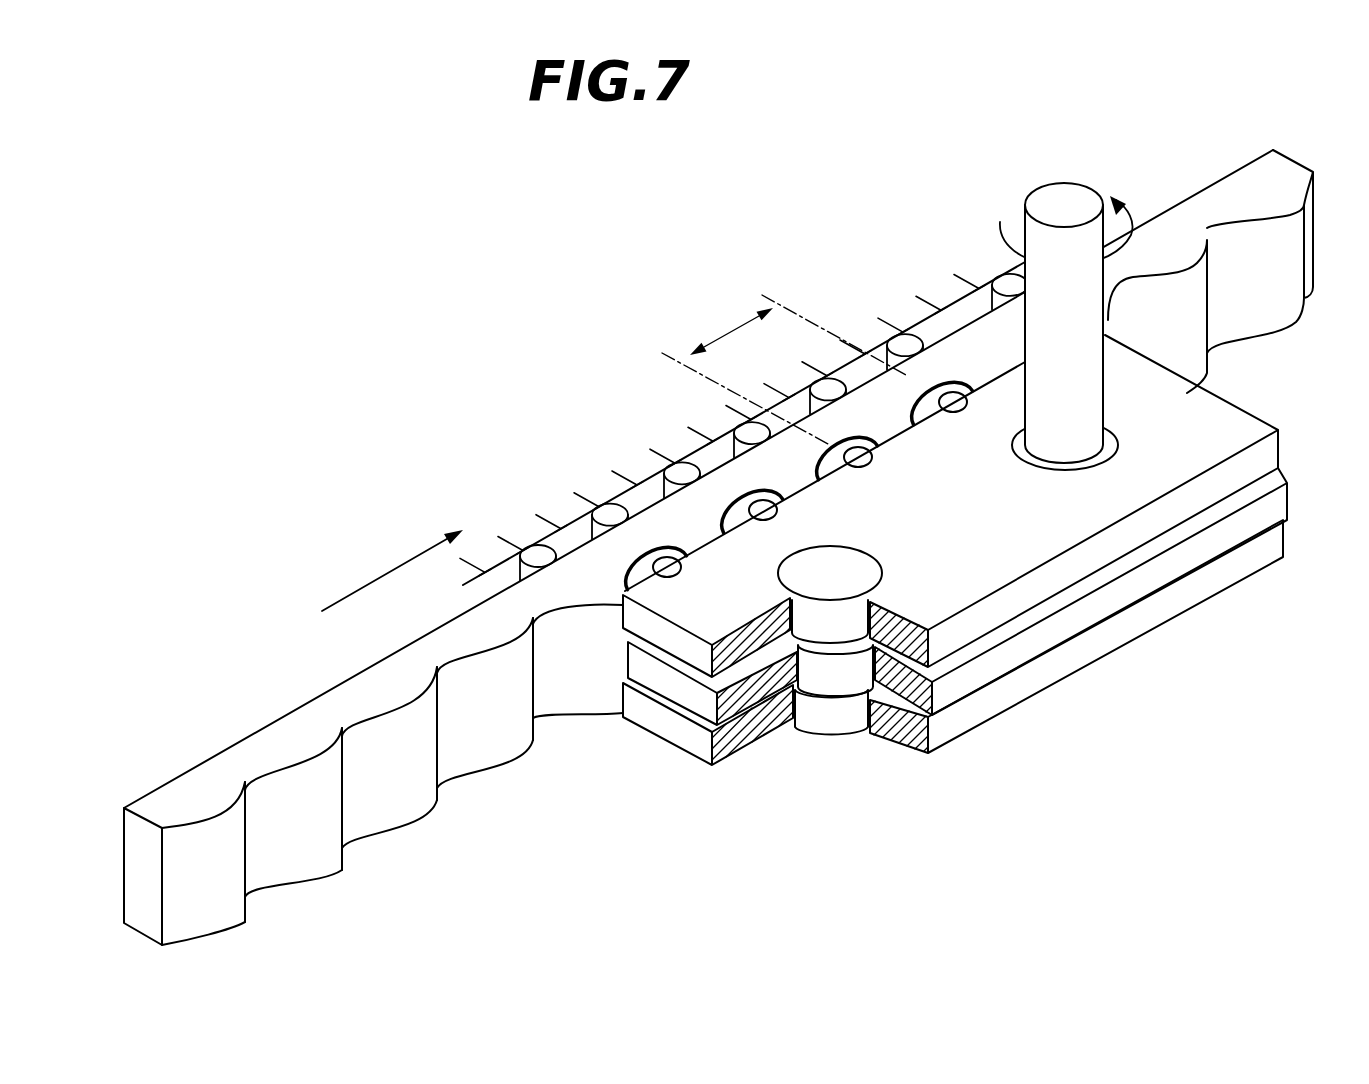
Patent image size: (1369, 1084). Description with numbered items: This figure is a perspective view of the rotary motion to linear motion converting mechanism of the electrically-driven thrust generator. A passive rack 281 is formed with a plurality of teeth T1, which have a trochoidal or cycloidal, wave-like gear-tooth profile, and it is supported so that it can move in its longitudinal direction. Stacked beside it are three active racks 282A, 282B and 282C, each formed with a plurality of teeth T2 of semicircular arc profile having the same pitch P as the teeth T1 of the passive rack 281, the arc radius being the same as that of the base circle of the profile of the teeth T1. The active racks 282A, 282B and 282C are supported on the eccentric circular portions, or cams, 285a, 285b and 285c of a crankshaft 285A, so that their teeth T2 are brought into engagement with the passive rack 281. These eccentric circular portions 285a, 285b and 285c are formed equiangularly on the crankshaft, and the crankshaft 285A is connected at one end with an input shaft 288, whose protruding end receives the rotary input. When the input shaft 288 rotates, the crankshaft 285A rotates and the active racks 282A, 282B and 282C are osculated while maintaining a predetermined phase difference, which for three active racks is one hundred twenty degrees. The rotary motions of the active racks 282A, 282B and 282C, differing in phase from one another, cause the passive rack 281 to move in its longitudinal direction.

The passive rack 281 is at (377, 686).
The active rack 282A is at (975, 623).
The active rack 282B is at (980, 673).
The active rack 282C is at (963, 720).
The crankshaft 285A is at (811, 715).
The eccentric circular portion 285a is at (835, 630).
The eccentric circular portion 285b is at (865, 668).
The eccentric circular portion 285c is at (840, 723).
The input shaft 288 is at (1052, 198).
The teeth T1 is at (520, 730).
The teeth T2 is at (636, 576).
The pitch P is at (784, 370).